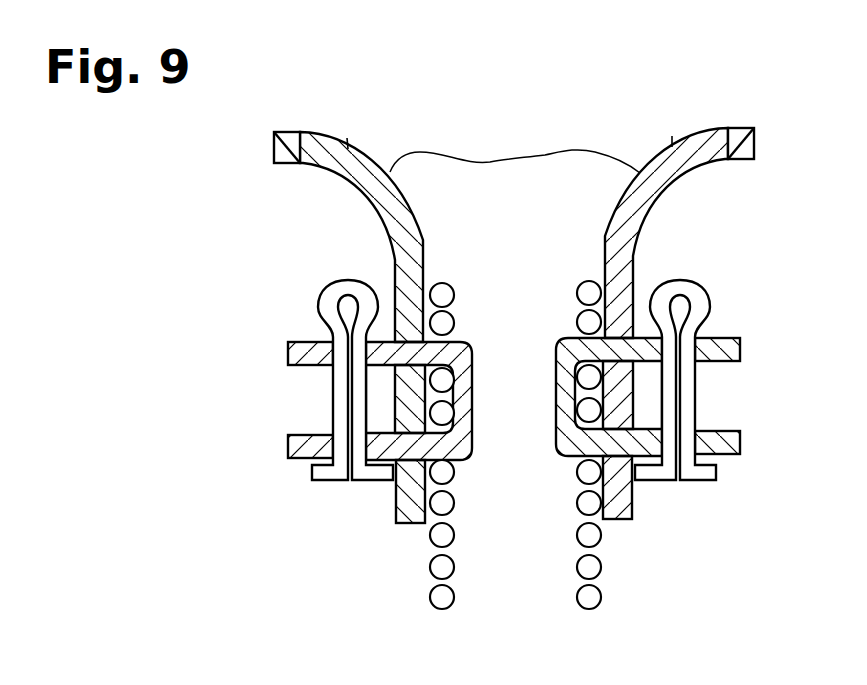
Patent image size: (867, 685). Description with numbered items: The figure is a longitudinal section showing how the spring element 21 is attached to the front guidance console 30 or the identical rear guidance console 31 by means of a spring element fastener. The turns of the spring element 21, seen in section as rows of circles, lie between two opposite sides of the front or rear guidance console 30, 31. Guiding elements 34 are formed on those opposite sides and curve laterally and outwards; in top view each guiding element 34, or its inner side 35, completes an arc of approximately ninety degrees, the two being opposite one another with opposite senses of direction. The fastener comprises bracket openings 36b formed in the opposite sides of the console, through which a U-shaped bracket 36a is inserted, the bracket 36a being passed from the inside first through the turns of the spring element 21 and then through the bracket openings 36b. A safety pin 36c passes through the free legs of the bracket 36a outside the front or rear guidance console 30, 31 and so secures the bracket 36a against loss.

The spring element 21 is at (430, 569).
The front guidance console 30 is at (741, 589).
The rear guidance console 31 is at (667, 524).
The guiding element 34 is at (274, 150).
The inner side 35 is at (347, 146).
The U-shaped bracket 36a is at (288, 343).
The bracket opening 36b is at (397, 368).
The safety pin 36c is at (345, 281).